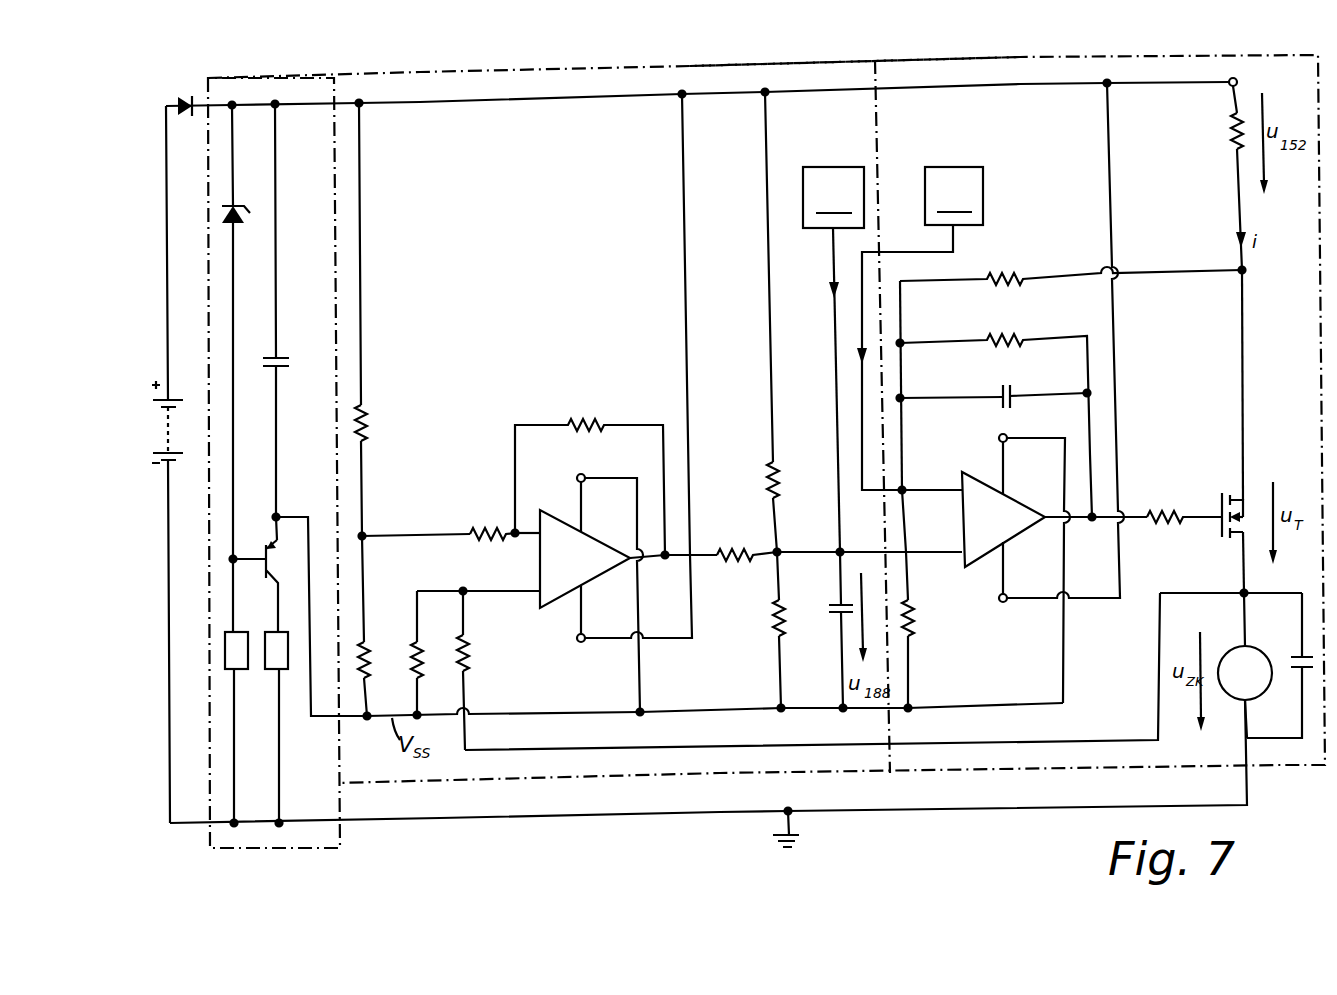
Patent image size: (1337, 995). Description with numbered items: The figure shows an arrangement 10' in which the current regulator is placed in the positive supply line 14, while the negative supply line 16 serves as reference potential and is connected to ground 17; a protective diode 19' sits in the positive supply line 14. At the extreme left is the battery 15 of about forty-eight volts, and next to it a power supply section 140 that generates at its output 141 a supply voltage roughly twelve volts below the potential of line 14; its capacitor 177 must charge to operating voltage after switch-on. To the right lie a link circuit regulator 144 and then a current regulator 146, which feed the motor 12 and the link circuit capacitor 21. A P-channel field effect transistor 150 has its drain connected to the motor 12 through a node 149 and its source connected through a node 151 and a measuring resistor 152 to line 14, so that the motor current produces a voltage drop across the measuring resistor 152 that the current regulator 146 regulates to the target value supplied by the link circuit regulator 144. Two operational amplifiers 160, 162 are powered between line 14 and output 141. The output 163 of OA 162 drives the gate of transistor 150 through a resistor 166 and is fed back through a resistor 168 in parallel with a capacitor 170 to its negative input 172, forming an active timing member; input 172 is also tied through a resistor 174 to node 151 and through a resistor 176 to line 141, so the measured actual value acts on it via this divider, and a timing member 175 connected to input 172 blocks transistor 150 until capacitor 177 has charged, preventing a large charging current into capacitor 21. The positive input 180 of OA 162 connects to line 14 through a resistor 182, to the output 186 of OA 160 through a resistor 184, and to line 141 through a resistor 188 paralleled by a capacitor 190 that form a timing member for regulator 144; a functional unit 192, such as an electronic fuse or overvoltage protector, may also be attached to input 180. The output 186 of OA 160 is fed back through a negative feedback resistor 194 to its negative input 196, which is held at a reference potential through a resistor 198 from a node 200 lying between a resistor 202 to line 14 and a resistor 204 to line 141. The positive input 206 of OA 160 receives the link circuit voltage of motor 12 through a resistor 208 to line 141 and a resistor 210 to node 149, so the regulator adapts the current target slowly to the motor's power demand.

The arrangement 10' is at (832, 41).
The motor 12 is at (1260, 648).
The positive supply line 14 is at (546, 103).
The battery 15 is at (160, 428).
The negative supply line 16 is at (572, 818).
The ground 17 is at (802, 838).
The protective diode 19' is at (193, 83).
The link circuit capacitor 21 is at (1290, 668).
The power supply section 140 is at (286, 76).
The output of power supply section 141 is at (282, 513).
The link circuit regulator 144 is at (444, 73).
The current regulator 146 is at (940, 60).
The node 149 is at (1240, 590).
The P-channel field effect transistor 150 is at (1222, 490).
The node 151 is at (1248, 270).
The measuring resistor 152 is at (1234, 148).
The operational amplifier 160 is at (548, 508).
The operational amplifier 162 is at (968, 470).
The output of OA 162 163 is at (1092, 522).
The resistor 166 is at (1162, 512).
The resistor 168 is at (1010, 335).
The capacitor 170 is at (1014, 392).
The negative input of OA 162 172 is at (927, 492).
The resistor 174 is at (1006, 276).
The timing member 175 is at (920, 328).
The resistor 176 is at (914, 624).
The capacitor 177 is at (282, 356).
The positive input of OA 162 180 is at (940, 556).
The resistor 182 is at (768, 464).
The resistor 184 is at (726, 550).
The output of OA 160 186 is at (634, 566).
The resistor 188 is at (774, 610).
The capacitor 190 is at (836, 614).
The functional unit 192 is at (833, 361).
The negative feedback resistor 194 is at (590, 422).
The negative input of OA 160 196 is at (528, 536).
The resistor 198 is at (476, 530).
The node 200 is at (368, 536).
The resistor 202 is at (372, 418).
The resistor 204 is at (370, 642).
The positive input of OA 160 206 is at (508, 594).
The resistor 208 is at (421, 660).
The resistor 210 is at (474, 650).